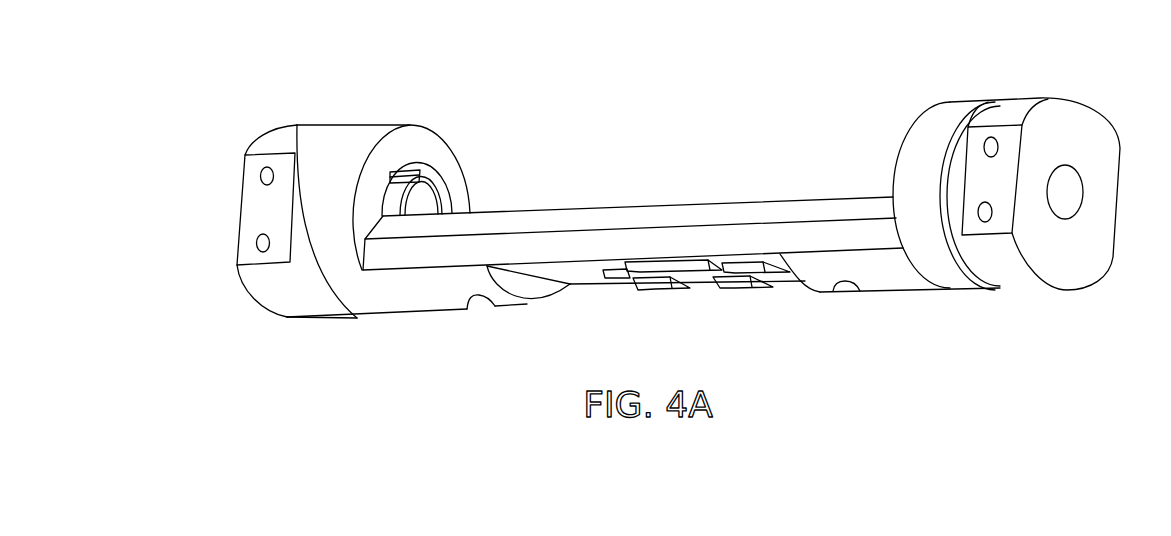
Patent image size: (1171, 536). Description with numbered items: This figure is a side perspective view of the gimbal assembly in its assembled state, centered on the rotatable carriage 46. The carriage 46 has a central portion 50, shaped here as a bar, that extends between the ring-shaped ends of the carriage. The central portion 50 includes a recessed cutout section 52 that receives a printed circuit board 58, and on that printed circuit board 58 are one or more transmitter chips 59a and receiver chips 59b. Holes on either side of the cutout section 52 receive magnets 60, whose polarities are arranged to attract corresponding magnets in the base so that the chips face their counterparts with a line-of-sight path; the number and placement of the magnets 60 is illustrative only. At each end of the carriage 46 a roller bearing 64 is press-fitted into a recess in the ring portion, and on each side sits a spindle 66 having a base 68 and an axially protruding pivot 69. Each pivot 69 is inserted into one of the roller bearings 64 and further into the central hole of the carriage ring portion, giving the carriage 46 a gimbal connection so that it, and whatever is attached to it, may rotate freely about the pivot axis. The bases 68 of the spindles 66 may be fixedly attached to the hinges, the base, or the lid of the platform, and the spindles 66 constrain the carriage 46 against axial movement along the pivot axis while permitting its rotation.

The rotatable carriage 46 is at (762, 150).
The central portion 50 is at (598, 238).
The recessed cutout section 52 is at (572, 284).
The printed circuit board 58 is at (786, 282).
The transmitter chips 59a is at (662, 288).
The receiver chips 59b is at (743, 288).
The magnets 60 is at (477, 300).
The roller bearings 64 is at (952, 180).
The spindle 66 is at (281, 296).
The base 68 is at (312, 147).
The axially protruding pivot 69 is at (423, 177).